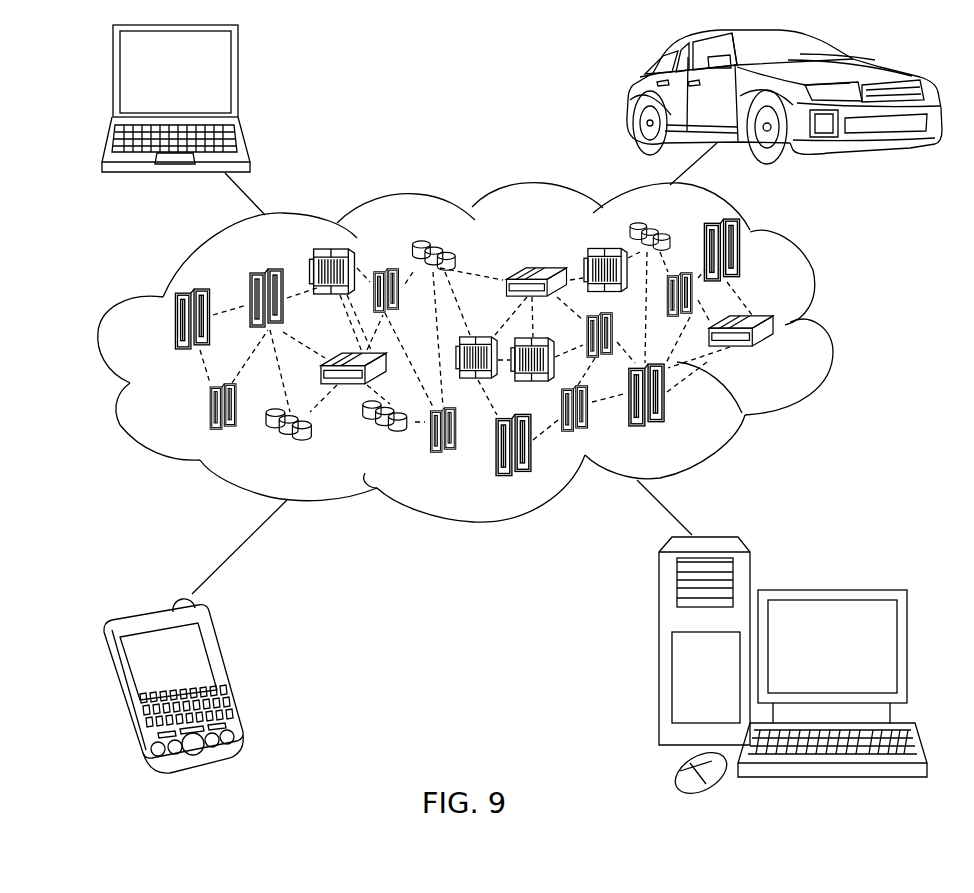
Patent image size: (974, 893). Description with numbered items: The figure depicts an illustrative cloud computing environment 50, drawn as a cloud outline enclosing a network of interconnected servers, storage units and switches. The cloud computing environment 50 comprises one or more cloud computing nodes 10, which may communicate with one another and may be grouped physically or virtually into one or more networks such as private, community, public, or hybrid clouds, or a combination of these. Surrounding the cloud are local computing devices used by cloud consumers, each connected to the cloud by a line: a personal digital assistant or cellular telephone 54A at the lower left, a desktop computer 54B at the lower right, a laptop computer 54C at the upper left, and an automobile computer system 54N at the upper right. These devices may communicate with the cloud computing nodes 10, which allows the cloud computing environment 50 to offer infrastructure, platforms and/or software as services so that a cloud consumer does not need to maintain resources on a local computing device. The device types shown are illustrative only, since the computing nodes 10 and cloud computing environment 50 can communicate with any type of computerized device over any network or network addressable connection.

The cloud computing nodes 10 is at (778, 358).
The cloud computing environment 50 is at (832, 328).
The personal digital assistant (PDA) or cellular telephone 54A is at (228, 672).
The desktop computer 54B is at (830, 590).
The laptop computer 54C is at (237, 80).
The automobile computer system 54N is at (628, 100).